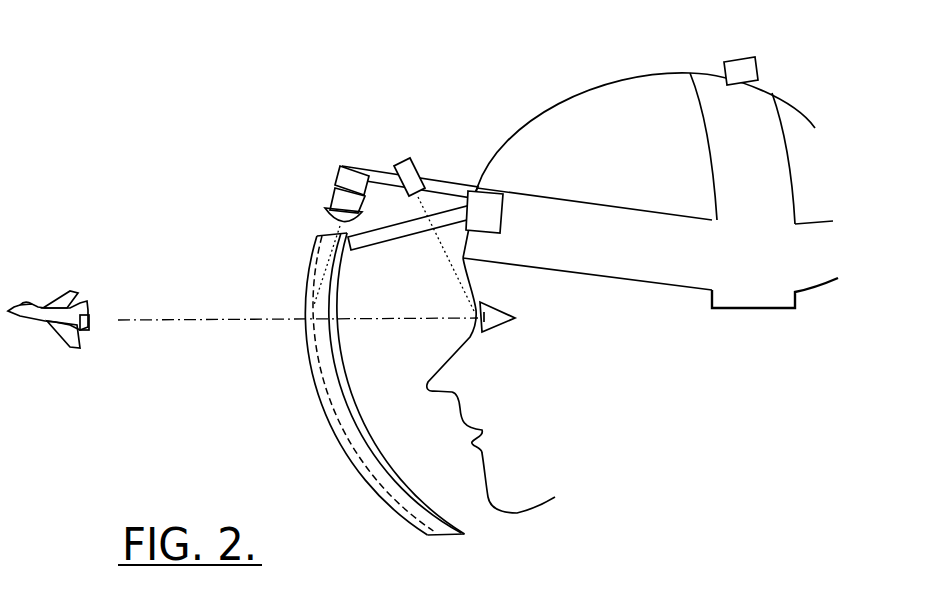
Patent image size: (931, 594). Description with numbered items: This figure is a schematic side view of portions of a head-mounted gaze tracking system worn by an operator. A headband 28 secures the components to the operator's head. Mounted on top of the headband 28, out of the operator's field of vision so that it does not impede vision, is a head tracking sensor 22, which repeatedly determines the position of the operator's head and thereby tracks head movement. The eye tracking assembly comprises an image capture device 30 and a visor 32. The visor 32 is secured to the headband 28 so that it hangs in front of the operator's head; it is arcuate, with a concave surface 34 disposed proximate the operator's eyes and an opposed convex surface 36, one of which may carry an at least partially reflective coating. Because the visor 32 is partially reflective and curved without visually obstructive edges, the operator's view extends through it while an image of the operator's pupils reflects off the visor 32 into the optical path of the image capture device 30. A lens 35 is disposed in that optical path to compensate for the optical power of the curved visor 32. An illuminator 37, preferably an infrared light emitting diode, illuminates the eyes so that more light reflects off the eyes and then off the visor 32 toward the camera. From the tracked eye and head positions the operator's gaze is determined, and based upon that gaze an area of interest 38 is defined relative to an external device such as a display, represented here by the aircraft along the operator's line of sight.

The head tracking sensor 22 is at (742, 59).
The headband 28 is at (673, 287).
The image capture device 30 is at (335, 175).
The visor 32 is at (352, 462).
The concave surface 34 is at (360, 372).
The lens 35 is at (325, 210).
The convex surface 36 is at (296, 278).
The illuminator 37 is at (400, 163).
The area of interest 38 is at (69, 270).